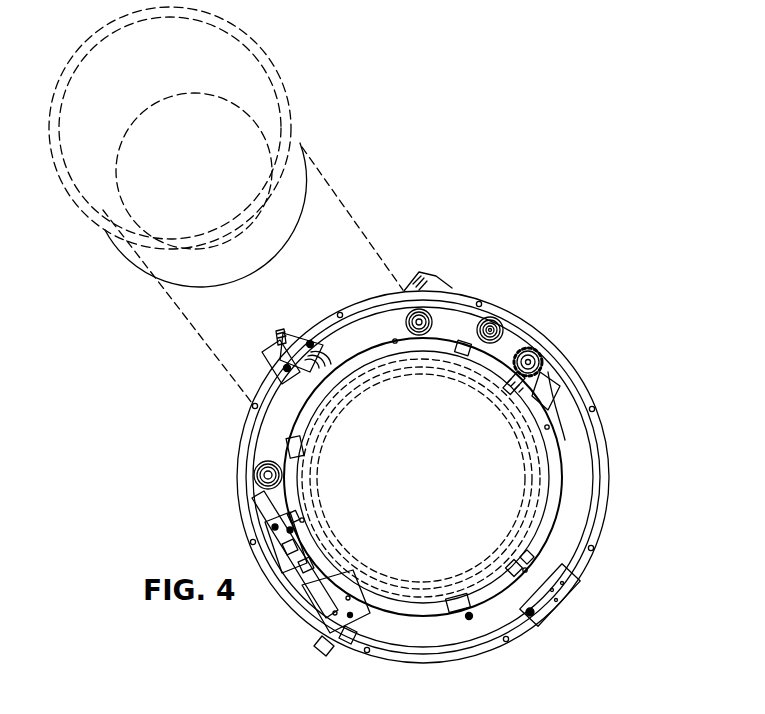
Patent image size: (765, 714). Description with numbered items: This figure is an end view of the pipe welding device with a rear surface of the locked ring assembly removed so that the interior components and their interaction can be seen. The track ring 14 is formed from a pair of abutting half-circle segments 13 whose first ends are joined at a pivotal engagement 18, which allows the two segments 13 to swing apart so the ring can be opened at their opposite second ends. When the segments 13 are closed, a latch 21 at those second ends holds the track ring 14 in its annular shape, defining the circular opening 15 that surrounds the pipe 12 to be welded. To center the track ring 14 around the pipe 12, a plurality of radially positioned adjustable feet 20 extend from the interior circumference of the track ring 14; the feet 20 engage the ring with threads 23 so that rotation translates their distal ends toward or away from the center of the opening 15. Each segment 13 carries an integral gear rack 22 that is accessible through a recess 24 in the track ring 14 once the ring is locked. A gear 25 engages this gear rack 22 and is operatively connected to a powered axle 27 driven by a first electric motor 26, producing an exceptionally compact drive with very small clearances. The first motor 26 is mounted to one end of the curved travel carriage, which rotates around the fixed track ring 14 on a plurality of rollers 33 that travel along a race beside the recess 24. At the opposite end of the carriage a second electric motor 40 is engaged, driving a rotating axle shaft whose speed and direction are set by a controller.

The pipe 12 is at (293, 134).
The segments 13 is at (598, 546).
The track ring 14 is at (306, 622).
The opening 15 is at (432, 488).
The pivotal engagement 18 is at (563, 608).
The adjustable feet 20 is at (500, 380).
The latch 21 is at (300, 335).
The gear rack 22 is at (530, 348).
The threads 23 is at (506, 390).
The recess 24 is at (570, 420).
The gear 25 is at (541, 360).
The first electric motor 26 is at (446, 286).
The powered axle 27 is at (553, 380).
The rollers 33 is at (412, 318).
The second electric motor 40 is at (262, 352).